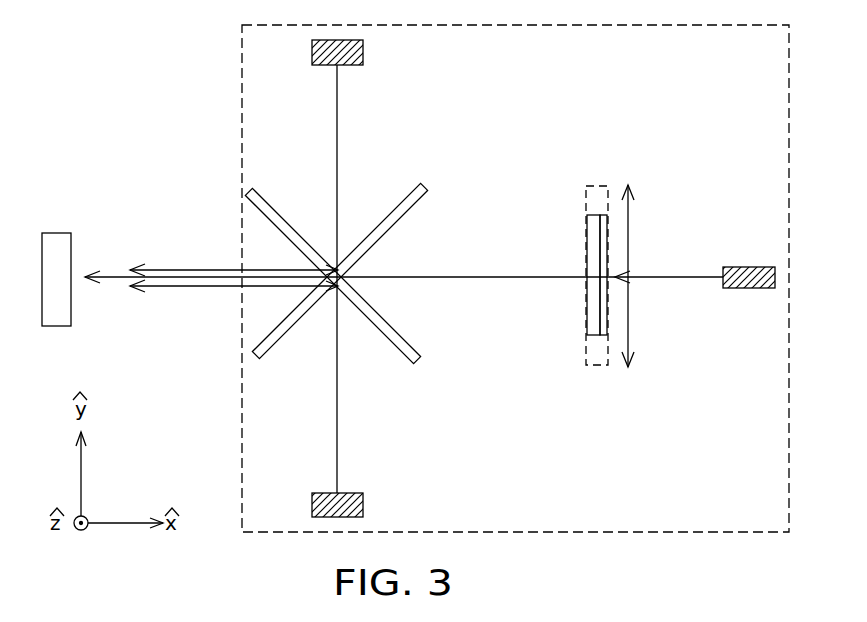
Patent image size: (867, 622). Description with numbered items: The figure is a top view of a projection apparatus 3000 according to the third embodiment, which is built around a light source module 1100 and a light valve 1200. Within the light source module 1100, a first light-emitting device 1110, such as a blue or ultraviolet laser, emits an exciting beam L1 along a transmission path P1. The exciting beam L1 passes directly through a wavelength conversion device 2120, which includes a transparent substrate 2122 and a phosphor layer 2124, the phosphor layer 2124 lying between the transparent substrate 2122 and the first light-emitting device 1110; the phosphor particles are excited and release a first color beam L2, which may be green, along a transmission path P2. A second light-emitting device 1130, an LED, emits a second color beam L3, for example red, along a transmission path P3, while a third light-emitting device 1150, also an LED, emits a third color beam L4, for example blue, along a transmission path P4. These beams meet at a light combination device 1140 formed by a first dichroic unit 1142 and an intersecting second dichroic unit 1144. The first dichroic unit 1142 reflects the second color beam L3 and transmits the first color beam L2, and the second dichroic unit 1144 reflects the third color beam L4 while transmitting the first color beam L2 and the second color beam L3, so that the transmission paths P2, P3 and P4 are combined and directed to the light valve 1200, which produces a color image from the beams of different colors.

The light source module 1100 is at (240, 97).
The first light-emitting device 1110 is at (748, 290).
The second light-emitting device 1130 is at (363, 52).
The light combination device 1140 is at (402, 252).
The first dichroic unit 1142 is at (423, 189).
The second dichroic unit 1144 is at (378, 318).
The third light-emitting device 1150 is at (363, 505).
The light valve 1200 is at (55, 240).
The wavelength conversion device 2120 is at (596, 337).
The transparent substrate 2122 is at (590, 314).
The phosphor layer 2124 is at (604, 314).
The projection apparatus 3000 is at (752, 577).
The exciting beam L1 is at (668, 278).
The first color beam L2 is at (213, 286).
The second color beam L3 is at (337, 104).
The third color beam L4 is at (170, 286).
The transmission path of the exciting beam P1 is at (690, 277).
The transmission path of the first color beam P2 is at (112, 276).
The transmission path of the second color beam P3 is at (337, 152).
The transmission path of the third color beam P4 is at (337, 375).